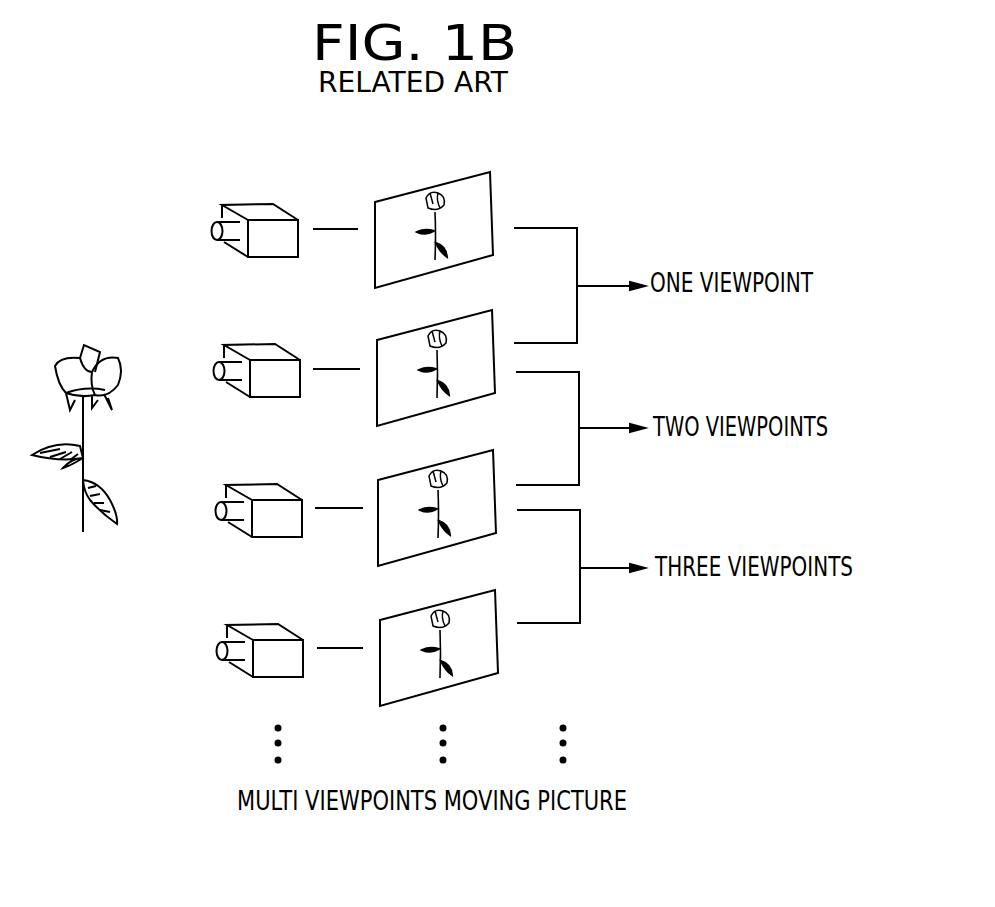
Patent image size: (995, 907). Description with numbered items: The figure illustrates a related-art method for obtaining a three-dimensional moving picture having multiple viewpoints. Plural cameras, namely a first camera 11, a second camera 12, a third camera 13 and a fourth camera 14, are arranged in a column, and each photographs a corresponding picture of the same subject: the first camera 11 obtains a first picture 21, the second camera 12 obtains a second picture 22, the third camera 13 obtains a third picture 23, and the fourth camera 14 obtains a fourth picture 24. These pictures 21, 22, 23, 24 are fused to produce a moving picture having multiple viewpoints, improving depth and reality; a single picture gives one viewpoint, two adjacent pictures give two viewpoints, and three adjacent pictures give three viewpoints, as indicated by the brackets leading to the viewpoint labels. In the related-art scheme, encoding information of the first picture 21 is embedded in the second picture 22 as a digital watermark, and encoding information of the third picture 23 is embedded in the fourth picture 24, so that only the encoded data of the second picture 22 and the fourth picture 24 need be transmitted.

The first camera 11 is at (257, 207).
The second camera 12 is at (264, 347).
The third camera 13 is at (266, 488).
The fourth camera 14 is at (268, 627).
The first picture 21 is at (494, 180).
The second picture 22 is at (496, 322).
The third picture 23 is at (498, 462).
The fourth picture 24 is at (500, 602).